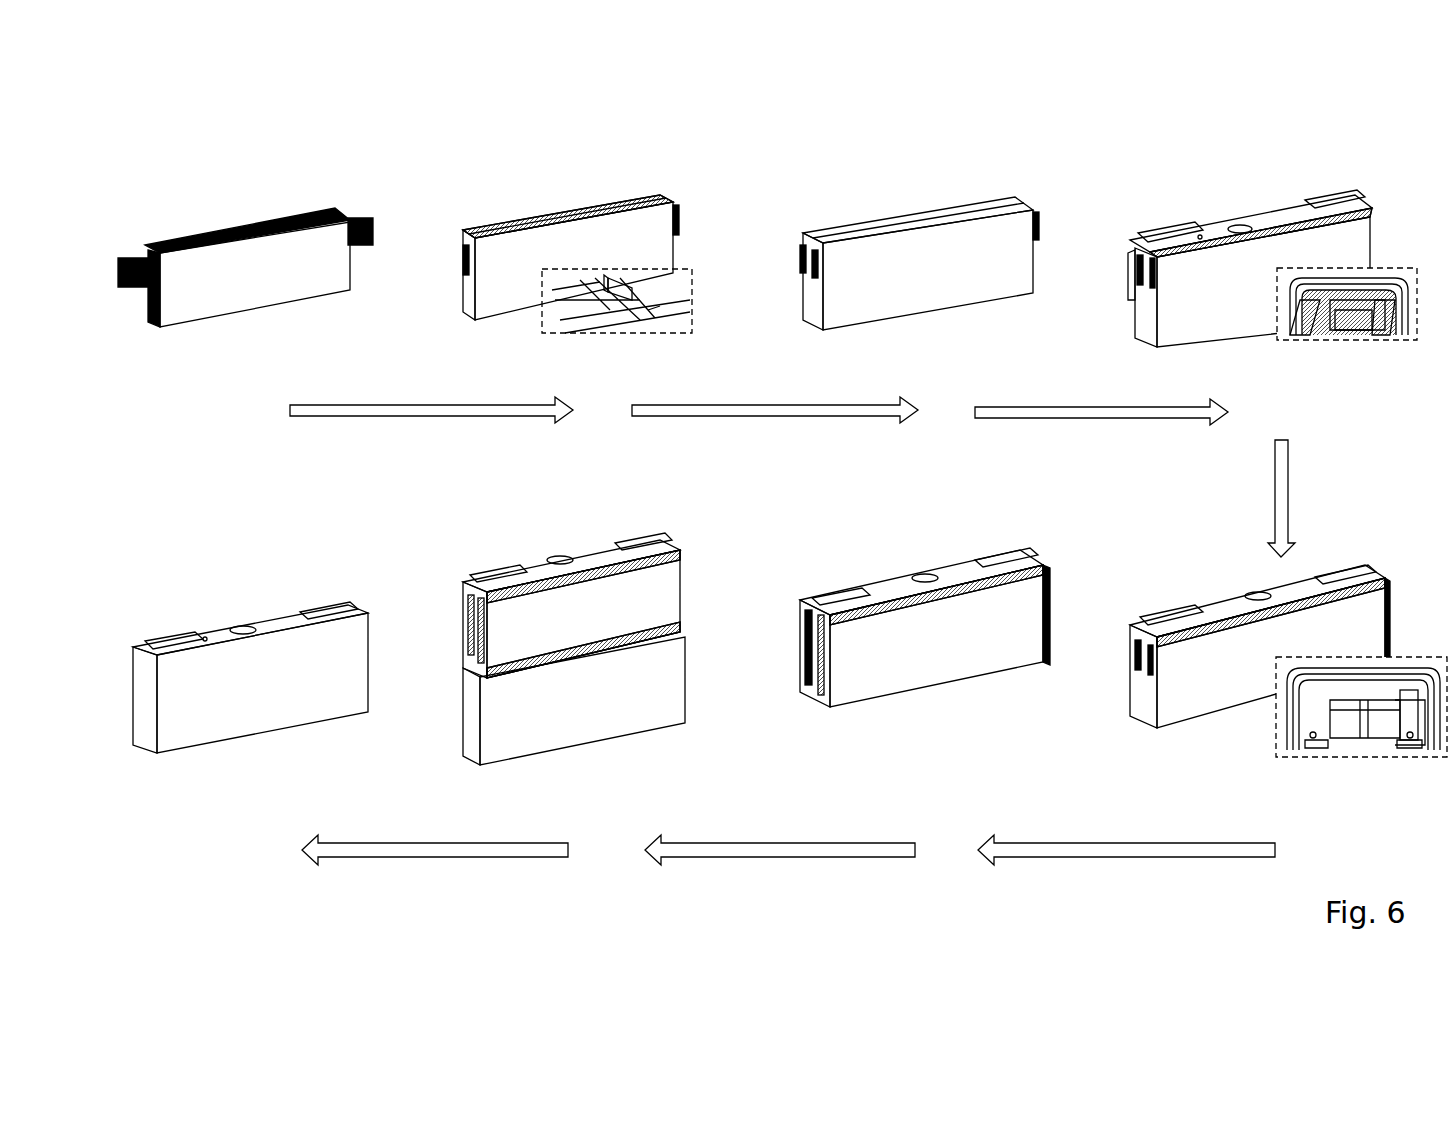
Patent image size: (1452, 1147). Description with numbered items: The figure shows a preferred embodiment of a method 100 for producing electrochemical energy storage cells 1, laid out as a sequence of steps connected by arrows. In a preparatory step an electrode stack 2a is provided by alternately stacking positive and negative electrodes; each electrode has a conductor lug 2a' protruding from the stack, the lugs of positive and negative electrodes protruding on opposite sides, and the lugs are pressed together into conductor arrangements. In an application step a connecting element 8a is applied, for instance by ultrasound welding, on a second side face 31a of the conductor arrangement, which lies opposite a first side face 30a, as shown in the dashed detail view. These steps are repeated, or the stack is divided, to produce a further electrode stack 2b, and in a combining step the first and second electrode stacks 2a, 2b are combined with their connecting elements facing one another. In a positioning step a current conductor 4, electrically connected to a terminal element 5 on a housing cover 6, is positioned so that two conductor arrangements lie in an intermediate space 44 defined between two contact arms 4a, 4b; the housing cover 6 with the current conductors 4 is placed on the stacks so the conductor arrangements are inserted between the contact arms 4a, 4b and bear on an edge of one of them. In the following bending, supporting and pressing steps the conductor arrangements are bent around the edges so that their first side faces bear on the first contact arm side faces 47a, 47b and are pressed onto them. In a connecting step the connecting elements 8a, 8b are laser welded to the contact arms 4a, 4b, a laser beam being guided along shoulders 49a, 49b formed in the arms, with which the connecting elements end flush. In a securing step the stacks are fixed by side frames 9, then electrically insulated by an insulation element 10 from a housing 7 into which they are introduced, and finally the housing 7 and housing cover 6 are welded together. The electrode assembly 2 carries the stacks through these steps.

The method 100 is at (172, 423).
The electrochemical energy storage cell 1 is at (188, 603).
The electrode assembly 2 is at (261, 288).
The electrode stack 2a is at (919, 228).
The second electrode stack 2b is at (875, 218).
The conductor lug 2a' is at (245, 202).
The current conductor 4 is at (1138, 260).
The contact arm 4a is at (1292, 330).
The contact arm 4b is at (1402, 748).
The terminal element 5 is at (1175, 232).
The housing cover 6 is at (1243, 218).
The housing 7 is at (595, 745).
The connecting element 8a is at (464, 243).
The second current collector plate 8b is at (1408, 700).
The side frame 9 is at (1048, 598).
The insulation element 10 is at (625, 627).
The first side face 30a is at (598, 300).
The second side face 31a is at (655, 308).
The intermediate space 44 is at (1320, 340).
The first contact arm side face 47a is at (1310, 292).
The first contact arm side face 47b is at (1380, 292).
The shoulder 49a is at (1306, 743).
The shoulder 49b is at (1412, 745).